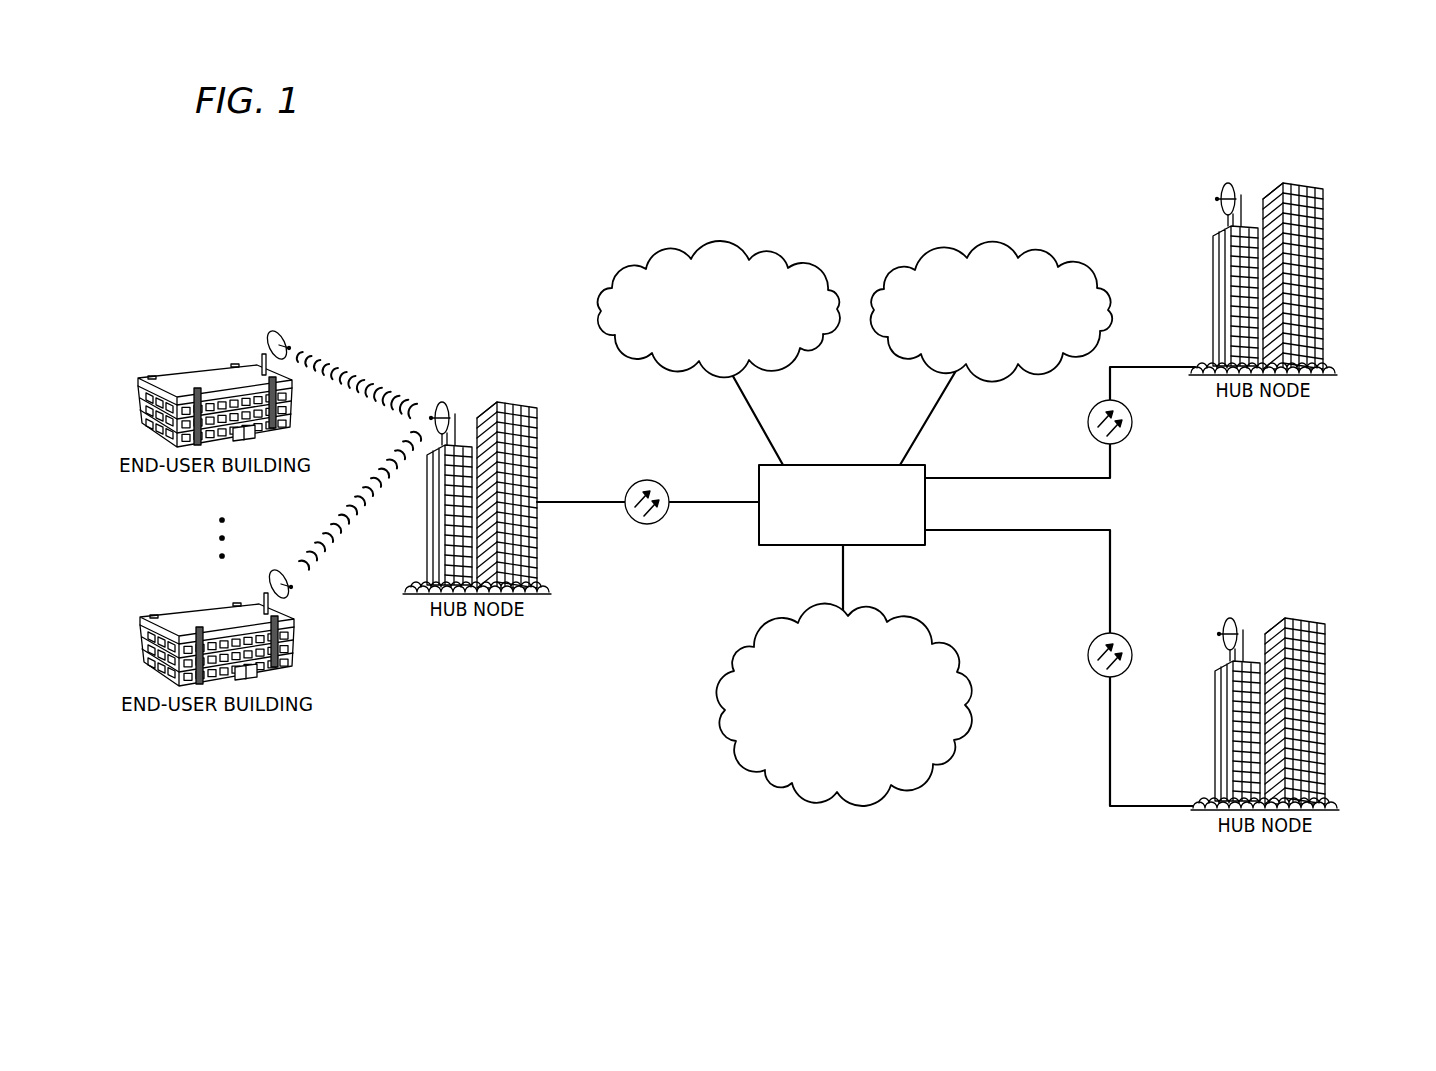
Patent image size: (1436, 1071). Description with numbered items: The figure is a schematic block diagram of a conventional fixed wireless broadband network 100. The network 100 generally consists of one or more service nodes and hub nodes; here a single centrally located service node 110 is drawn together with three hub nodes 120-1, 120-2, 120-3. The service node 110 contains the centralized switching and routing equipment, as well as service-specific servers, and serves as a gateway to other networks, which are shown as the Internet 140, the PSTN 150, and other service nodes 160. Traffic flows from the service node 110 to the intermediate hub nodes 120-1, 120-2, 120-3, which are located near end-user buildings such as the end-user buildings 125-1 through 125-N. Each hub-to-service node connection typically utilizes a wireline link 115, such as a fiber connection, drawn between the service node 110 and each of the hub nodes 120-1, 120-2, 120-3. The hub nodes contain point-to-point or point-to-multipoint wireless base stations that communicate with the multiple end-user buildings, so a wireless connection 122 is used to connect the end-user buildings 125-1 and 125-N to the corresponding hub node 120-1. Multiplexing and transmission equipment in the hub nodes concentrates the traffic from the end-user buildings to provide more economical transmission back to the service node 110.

The fixed wireless broadband network 100 is at (330, 213).
The service node 110 is at (843, 464).
The wireline link 115 is at (647, 478).
The hub node 120-1 is at (510, 400).
The hub node 120-2 is at (1325, 196).
The hub node 120-3 is at (1315, 624).
The wireless connection 122 is at (349, 368).
The end-user building 125-1 is at (197, 367).
The end-user building 125-N is at (193, 611).
The Internet 140 is at (663, 263).
The PSTN 150 is at (750, 657).
The other service nodes 160 is at (998, 262).